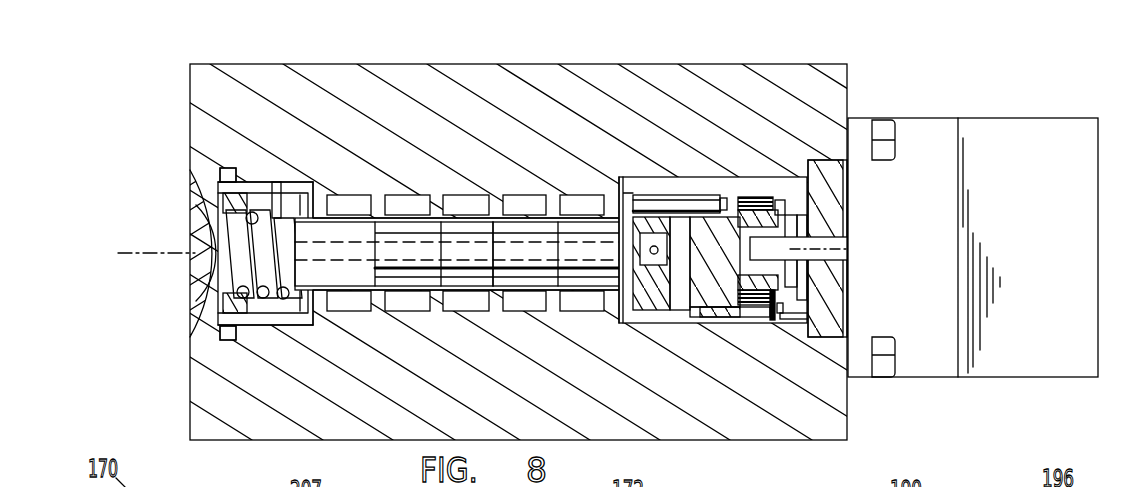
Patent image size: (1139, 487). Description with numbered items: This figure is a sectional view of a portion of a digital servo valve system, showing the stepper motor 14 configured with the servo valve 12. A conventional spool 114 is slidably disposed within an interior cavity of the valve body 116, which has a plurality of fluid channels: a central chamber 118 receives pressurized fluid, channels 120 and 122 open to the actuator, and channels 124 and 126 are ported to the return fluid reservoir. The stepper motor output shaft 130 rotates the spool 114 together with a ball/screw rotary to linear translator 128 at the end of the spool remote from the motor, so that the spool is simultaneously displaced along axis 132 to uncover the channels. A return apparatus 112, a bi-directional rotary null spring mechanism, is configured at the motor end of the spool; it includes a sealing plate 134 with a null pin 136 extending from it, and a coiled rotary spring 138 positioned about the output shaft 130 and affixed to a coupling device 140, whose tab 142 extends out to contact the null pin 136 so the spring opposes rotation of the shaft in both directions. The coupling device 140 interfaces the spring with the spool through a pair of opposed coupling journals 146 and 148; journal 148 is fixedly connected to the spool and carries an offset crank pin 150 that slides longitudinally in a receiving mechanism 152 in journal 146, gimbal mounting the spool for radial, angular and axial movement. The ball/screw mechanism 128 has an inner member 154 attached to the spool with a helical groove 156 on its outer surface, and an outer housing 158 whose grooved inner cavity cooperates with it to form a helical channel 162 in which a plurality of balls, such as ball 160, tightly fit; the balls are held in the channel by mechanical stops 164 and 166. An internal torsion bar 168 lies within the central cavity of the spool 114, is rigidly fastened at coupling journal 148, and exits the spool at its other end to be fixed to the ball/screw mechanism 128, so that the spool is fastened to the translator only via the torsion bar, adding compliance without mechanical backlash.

The servo valve 12 is at (336, 58).
The stepper motor 14 is at (997, 130).
The return apparatus 112 is at (731, 335).
The spool 114 is at (587, 272).
The valve body 116 is at (465, 207).
The central chamber 118 is at (468, 312).
The channel 120 is at (538, 312).
The channel 122 is at (401, 312).
The channel 124 is at (568, 193).
The channel 126 is at (354, 194).
The ball/screw rotary to linear translator 128 is at (194, 313).
The stepper motor output shaft 130 is at (833, 253).
The axis 132 is at (162, 251).
The sealing plate 134 is at (832, 185).
The null pin 136 is at (796, 316).
The coiled rotary spring 138 is at (752, 196).
The coupling device 140 is at (679, 318).
The tab 142 is at (760, 318).
The coupling journal 146 is at (708, 190).
The coupling journal 148 is at (649, 301).
The offset crank pin 150 is at (618, 181).
The receiving mechanism 152 is at (652, 200).
The inner member 154 is at (212, 284).
The helical groove 156 is at (218, 173).
The outer housing 158 is at (302, 318).
The ball 160 is at (257, 215).
The helical channel 162 is at (276, 318).
The mechanical stop 164 is at (194, 212).
The mechanical stop 166 is at (296, 266).
The internal torsion bar 168 is at (518, 237).